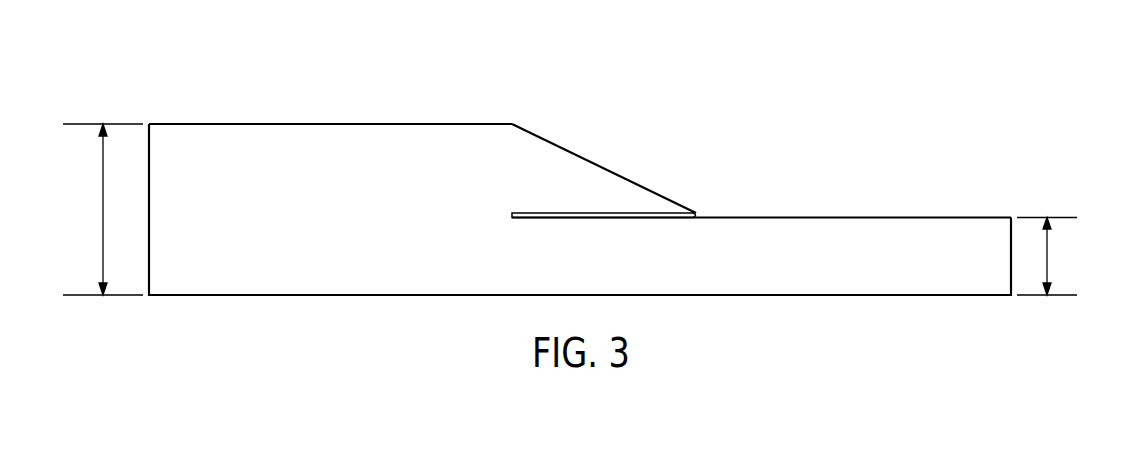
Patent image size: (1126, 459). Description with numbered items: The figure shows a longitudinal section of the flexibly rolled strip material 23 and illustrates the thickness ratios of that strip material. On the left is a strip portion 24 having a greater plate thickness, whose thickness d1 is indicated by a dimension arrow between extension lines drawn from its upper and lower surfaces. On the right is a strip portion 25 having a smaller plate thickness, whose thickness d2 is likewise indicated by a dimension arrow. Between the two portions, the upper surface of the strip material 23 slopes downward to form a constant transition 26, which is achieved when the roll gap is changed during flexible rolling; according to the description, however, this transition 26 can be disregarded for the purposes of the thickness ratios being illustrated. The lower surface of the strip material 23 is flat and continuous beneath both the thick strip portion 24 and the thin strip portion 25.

The flexibly rolled strip material 23 is at (345, 68).
The strip portion having a greater plate thickness 24 is at (230, 124).
The strip portion having a smaller plate thickness 25 is at (838, 217).
The transition 26 is at (598, 165).
The thickness of the strip portion having a greater plate thickness d1 is at (103, 208).
The thickness of the strip portion having a smaller plate thickness d2 is at (1047, 254).